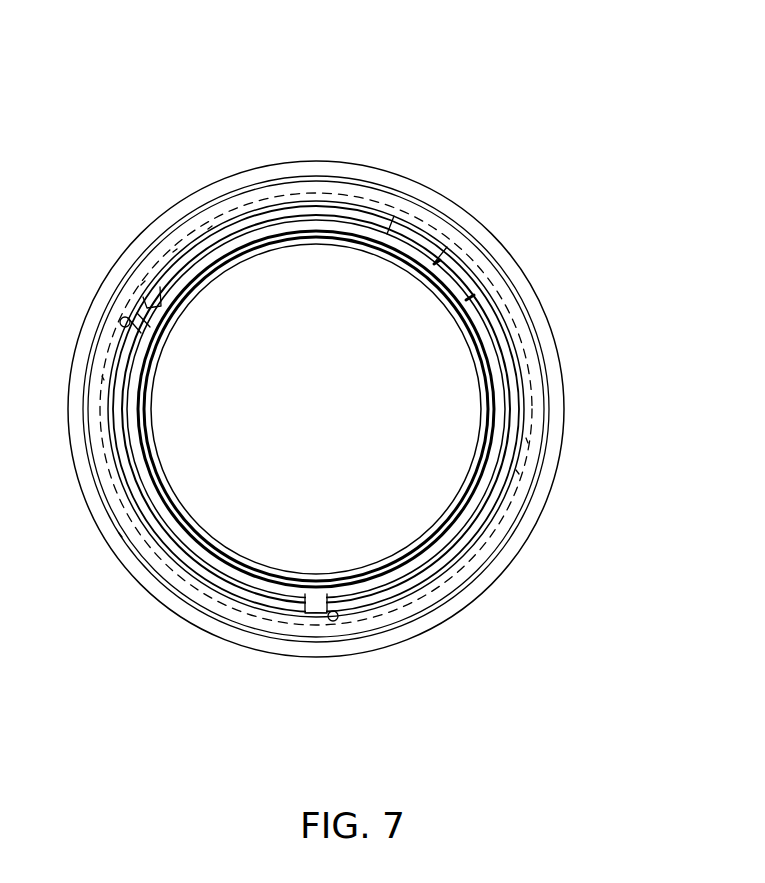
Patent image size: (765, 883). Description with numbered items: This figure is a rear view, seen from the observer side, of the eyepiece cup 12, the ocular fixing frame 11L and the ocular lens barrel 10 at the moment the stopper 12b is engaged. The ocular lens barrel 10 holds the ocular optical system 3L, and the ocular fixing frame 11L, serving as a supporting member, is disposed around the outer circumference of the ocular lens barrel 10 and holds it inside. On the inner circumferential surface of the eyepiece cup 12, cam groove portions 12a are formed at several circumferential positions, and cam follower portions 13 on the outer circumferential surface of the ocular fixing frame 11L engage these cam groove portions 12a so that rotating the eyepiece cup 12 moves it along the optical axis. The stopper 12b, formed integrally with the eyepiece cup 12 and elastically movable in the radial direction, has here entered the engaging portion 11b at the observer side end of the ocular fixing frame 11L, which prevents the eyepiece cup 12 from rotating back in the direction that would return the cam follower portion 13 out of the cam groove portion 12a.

The ocular optical system 3L is at (290, 488).
The ocular lens barrel 10 is at (162, 498).
The ocular fixing frame 11L is at (160, 290).
The engaging portion 11b is at (470, 298).
The eyepiece cup 12 is at (493, 548).
The cam groove portion 12a is at (523, 463).
The stopper 12b is at (440, 260).
The cam follower portion 13 is at (317, 200).